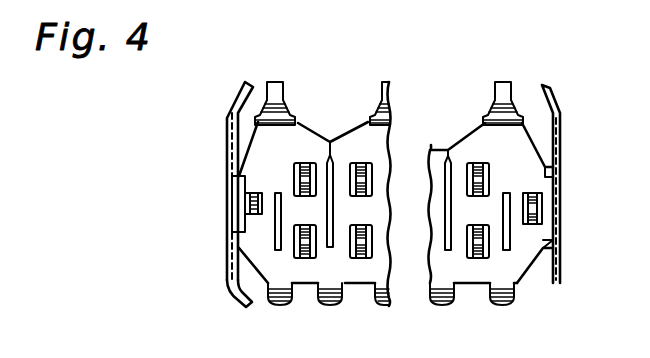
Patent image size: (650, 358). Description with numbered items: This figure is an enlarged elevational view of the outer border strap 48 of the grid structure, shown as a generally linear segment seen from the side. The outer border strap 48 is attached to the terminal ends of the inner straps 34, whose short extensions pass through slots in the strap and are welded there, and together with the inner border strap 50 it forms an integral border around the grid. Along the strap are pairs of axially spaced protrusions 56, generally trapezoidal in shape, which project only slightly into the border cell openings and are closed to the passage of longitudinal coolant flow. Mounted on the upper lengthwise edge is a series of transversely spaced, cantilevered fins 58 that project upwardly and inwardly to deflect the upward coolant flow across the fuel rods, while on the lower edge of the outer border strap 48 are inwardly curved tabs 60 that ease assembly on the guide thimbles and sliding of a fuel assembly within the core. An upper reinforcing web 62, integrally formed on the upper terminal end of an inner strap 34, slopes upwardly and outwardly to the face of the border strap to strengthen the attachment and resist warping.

The inner strap 34 is at (273, 234).
The outer border strap 48 is at (211, 128).
The inner border strap 50 is at (594, 150).
The protrusion 56 is at (247, 212).
The cantilevered fin 58 is at (239, 99).
The inwardly curved tab 60 is at (238, 298).
The upper reinforcing web 62 is at (330, 142).